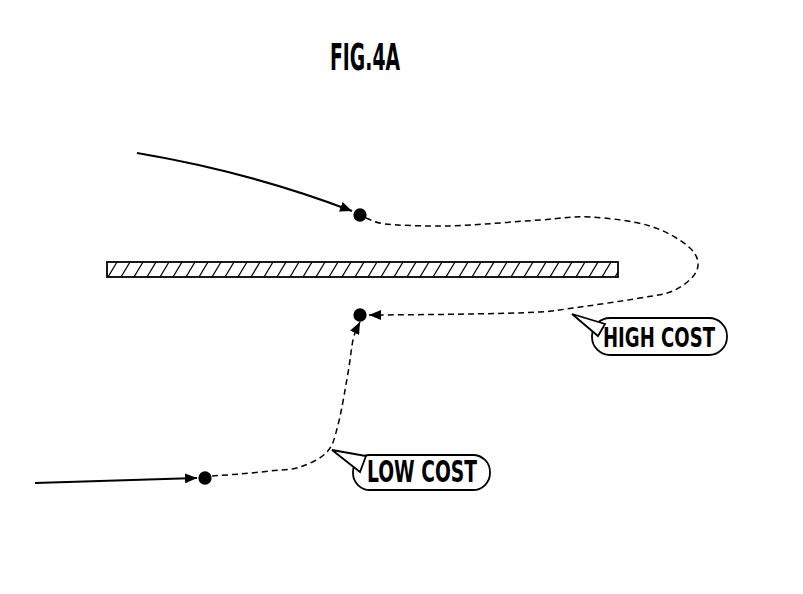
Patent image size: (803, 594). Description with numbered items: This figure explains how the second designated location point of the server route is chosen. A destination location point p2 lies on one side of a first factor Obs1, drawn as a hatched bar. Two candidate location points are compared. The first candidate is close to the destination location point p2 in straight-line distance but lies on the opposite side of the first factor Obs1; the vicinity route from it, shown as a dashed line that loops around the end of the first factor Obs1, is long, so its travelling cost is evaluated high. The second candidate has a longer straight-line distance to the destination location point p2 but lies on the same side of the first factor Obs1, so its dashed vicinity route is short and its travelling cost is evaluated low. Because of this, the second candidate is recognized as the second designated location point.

The first factor Obs1 is at (166, 262).
The destination location point p2 is at (349, 317).